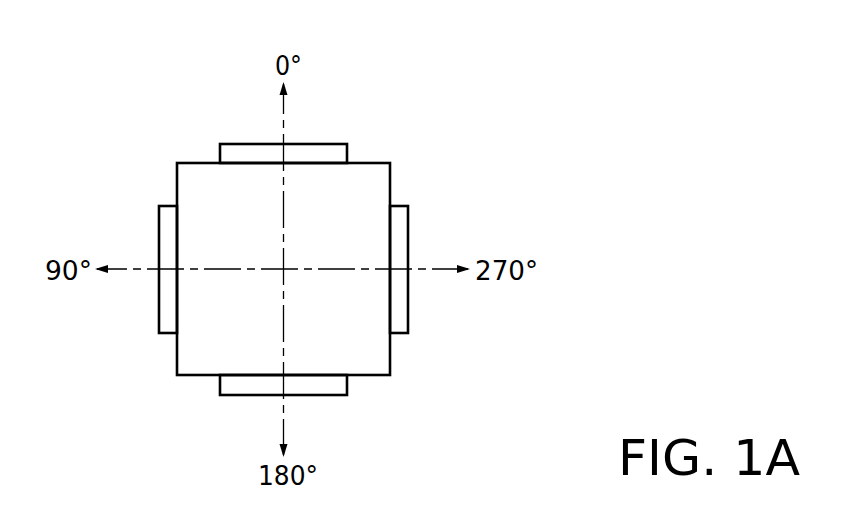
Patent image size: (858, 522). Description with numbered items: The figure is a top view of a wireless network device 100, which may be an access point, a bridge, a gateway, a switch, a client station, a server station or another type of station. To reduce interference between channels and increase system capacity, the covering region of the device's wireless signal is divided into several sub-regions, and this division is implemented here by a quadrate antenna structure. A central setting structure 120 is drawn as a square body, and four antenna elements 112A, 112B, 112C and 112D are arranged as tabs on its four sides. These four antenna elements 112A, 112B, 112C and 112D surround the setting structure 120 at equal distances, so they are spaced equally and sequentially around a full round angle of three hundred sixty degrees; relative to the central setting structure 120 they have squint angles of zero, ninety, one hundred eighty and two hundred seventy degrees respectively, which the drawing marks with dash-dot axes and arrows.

The wireless network device 100 is at (441, 84).
The setting structure 120 is at (208, 193).
The antenna element 112A is at (348, 150).
The antenna element 112B is at (159, 222).
The antenna element 112C is at (347, 393).
The antenna element 112D is at (409, 222).